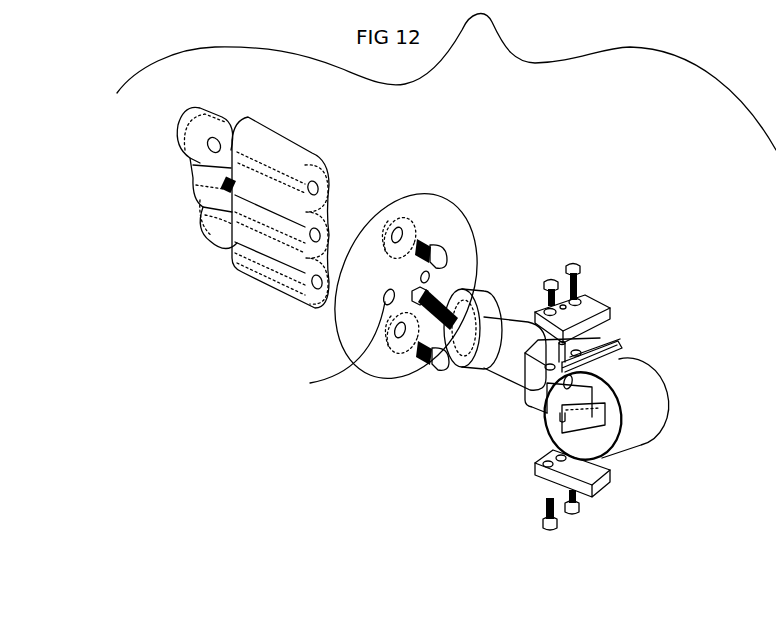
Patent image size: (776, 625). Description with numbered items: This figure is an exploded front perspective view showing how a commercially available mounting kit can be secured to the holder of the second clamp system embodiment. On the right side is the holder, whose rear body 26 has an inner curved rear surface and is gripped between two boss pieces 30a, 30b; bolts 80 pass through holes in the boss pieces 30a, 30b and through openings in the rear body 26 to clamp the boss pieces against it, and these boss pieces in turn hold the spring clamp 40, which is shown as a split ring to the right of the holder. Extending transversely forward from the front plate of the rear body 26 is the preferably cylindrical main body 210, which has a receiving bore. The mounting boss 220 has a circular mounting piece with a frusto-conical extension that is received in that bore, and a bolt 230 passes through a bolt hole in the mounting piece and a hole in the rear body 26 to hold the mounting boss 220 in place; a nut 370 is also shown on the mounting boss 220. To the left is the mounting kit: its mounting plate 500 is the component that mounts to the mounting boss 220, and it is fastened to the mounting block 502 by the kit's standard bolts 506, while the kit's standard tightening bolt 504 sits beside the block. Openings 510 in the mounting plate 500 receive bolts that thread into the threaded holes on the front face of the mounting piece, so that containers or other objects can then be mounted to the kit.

The rear body 26 is at (533, 385).
The boss piece 30a is at (588, 307).
The boss piece 30b is at (547, 480).
The spring clamp 40 is at (643, 390).
The bolts 80 is at (547, 279).
The main body 210 is at (508, 363).
The mounting boss 220 is at (482, 323).
The bolt 230 is at (397, 330).
The nut 370 is at (419, 286).
The mounting plate 500 is at (439, 215).
The mounting block 502 is at (275, 147).
The tightening bolt 504 is at (200, 187).
The bolts 506 is at (442, 255).
The openings 510 is at (321, 349).